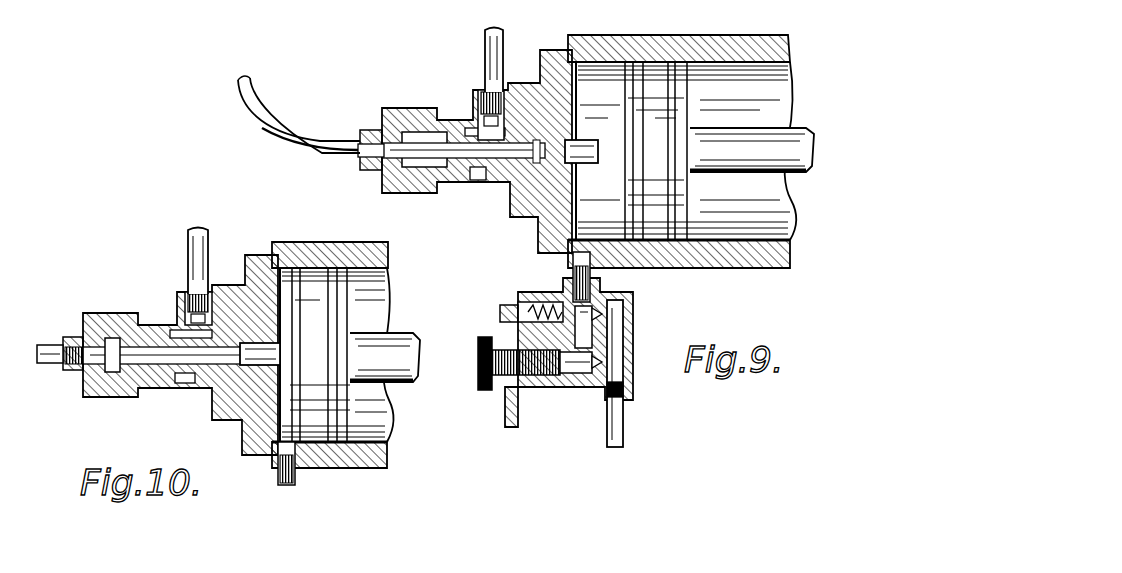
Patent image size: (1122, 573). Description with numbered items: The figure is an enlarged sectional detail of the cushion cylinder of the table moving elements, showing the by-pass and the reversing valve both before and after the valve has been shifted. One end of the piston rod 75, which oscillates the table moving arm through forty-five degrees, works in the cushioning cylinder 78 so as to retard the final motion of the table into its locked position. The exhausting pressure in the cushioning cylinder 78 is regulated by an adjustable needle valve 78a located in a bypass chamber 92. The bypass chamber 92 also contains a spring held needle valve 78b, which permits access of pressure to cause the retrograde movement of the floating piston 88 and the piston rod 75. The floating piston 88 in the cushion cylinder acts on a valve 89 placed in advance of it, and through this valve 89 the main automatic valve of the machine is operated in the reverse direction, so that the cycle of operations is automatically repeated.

In FIG. 9, the piston rod 75 is at (737, 135).
In FIG. 10, the piston rod 75 is at (395, 345).
In FIG. 9, the cushioning cylinder 78 is at (763, 268).
In FIG. 10, the cushioning cylinder 78 is at (377, 468).
In FIG. 9, the adjustable needle valve 78a is at (575, 400).
In FIG. 9, the spring held needle valve 78b is at (604, 296).
In FIG. 9, the floating piston 88 is at (652, 80).
In FIG. 10, the floating piston 88 is at (318, 432).
In FIG. 9, the valve 89 is at (467, 120).
In FIG. 10, the valve 89 is at (138, 390).
In FIG. 9, the bypass chamber 92 is at (527, 392).